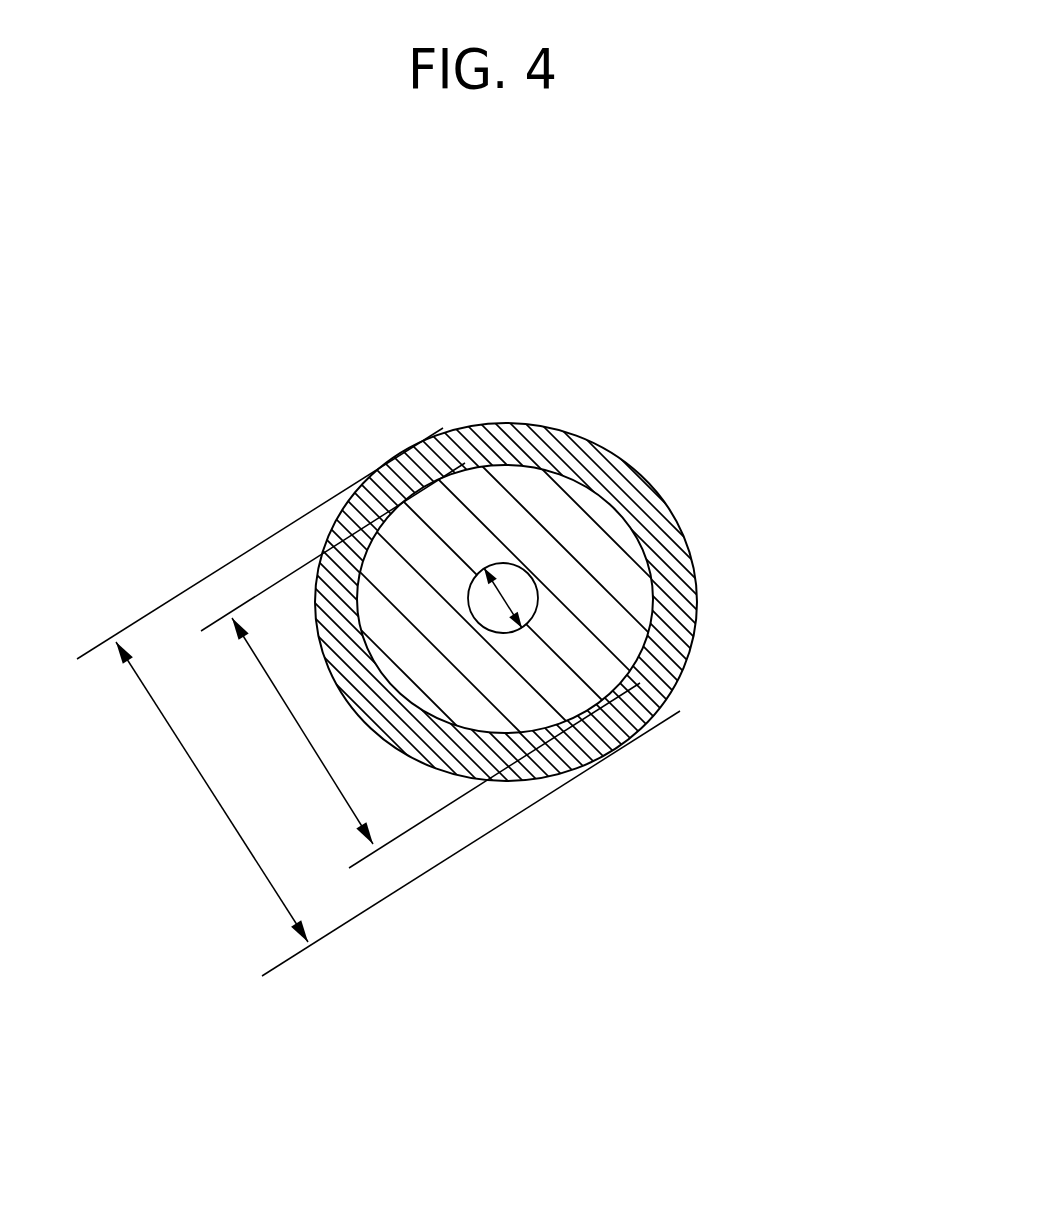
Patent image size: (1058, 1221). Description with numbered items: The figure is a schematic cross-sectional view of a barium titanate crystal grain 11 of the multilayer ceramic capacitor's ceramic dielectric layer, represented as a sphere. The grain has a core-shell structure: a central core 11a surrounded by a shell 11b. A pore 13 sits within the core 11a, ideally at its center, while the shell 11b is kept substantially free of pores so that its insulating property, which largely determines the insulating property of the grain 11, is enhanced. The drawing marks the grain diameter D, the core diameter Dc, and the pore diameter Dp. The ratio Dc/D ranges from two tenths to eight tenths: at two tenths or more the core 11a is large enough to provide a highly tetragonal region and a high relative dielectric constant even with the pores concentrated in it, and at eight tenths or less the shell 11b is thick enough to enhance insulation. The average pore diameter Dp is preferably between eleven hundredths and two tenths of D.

The barium titanate crystal grain 11 is at (605, 423).
The core 11a is at (628, 580).
The shell 11b is at (656, 679).
The pore 13 is at (531, 603).
The diameter of the barium titanate crystal grain D is at (378, 702).
The diameter of the core Dc is at (420, 665).
The average diameter of the pores Dp is at (508, 597).